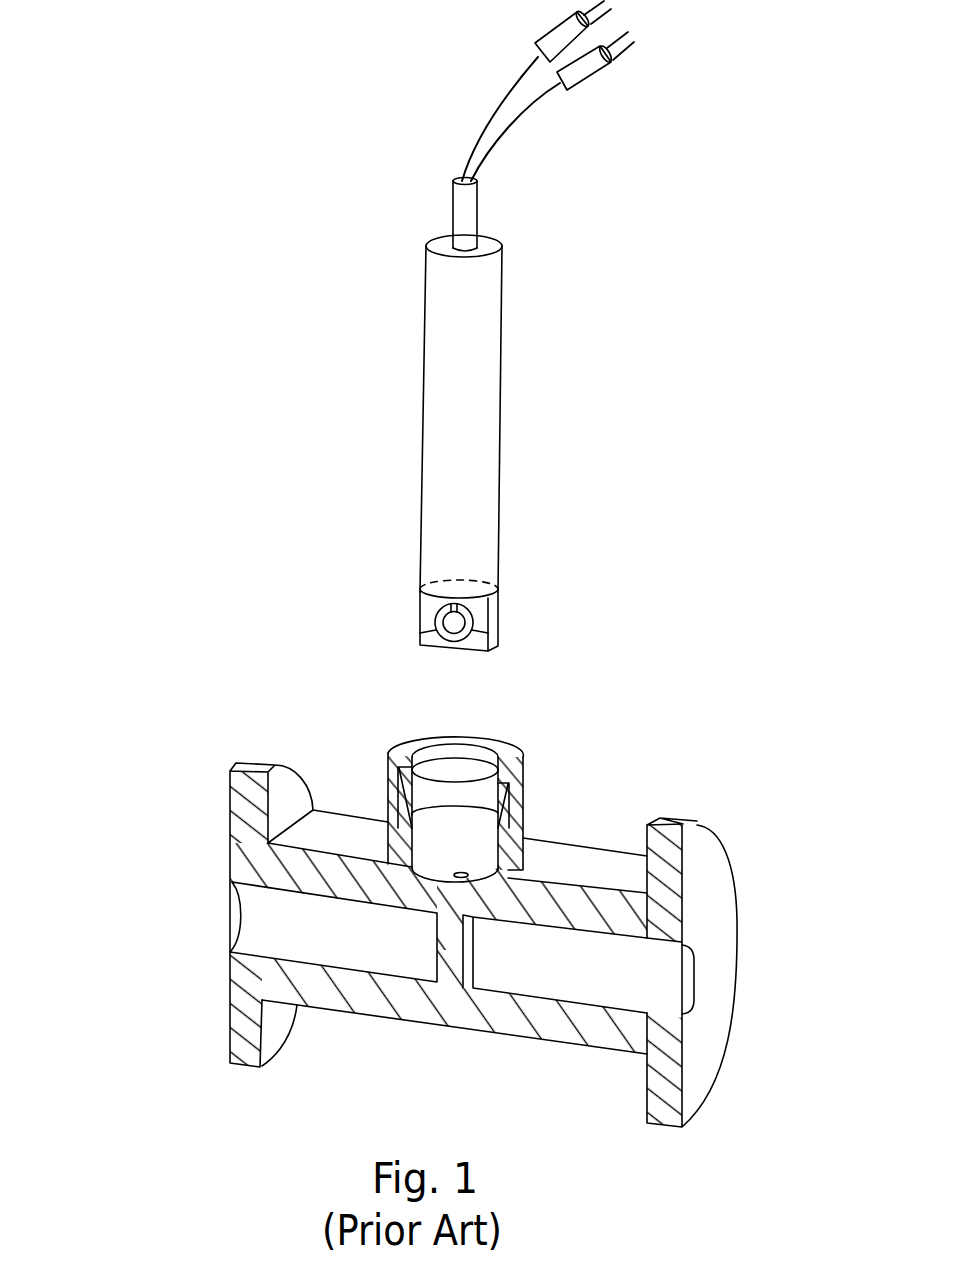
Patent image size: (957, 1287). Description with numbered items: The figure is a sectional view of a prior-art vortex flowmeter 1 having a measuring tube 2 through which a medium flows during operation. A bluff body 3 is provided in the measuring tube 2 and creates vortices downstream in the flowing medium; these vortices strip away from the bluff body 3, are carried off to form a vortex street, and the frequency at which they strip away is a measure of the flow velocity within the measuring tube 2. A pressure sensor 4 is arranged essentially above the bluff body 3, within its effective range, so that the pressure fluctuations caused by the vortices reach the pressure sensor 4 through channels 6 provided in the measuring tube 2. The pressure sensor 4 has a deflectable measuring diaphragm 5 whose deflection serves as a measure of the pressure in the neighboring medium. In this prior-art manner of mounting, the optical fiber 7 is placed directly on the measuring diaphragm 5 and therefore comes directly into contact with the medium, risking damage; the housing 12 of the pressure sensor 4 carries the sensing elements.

The vortex flowmeter 1 is at (702, 718).
The measuring tube 2 is at (705, 899).
The bluff body 3 is at (448, 938).
The pressure sensor 4 is at (527, 598).
The measuring diaphragm 5 is at (420, 638).
The channels 6 is at (462, 869).
The optical fiber 7 is at (498, 640).
The housing 12 is at (432, 608).